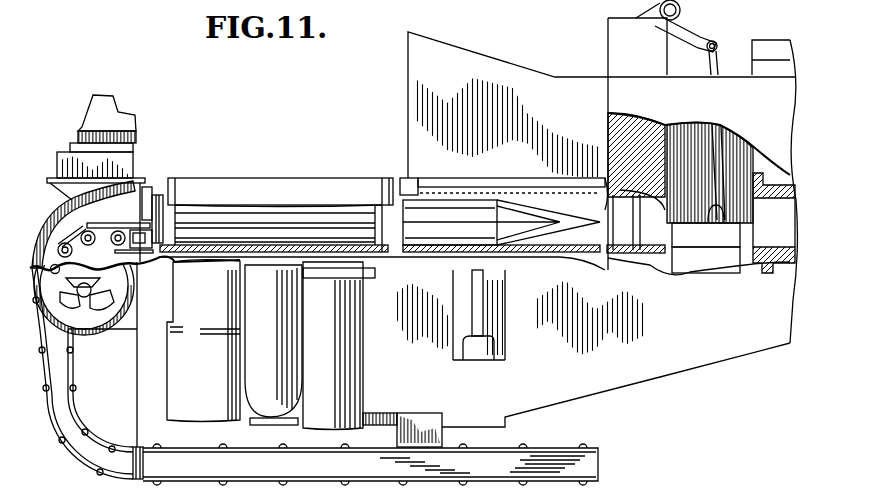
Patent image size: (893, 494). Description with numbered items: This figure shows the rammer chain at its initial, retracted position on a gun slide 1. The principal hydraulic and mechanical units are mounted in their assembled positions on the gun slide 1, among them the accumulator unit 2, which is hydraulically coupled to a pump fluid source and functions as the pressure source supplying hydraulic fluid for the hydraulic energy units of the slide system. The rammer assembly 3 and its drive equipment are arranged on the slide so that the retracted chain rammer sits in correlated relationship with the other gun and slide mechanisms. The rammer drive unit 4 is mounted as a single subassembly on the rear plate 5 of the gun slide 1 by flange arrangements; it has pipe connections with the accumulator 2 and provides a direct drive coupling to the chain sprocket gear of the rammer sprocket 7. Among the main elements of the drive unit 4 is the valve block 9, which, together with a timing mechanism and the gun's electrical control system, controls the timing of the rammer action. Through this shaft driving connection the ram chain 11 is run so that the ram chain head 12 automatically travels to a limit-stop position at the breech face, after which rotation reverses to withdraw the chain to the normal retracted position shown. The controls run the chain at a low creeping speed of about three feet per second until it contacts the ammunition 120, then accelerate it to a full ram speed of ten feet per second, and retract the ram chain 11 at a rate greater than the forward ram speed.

The gun slide 1 is at (408, 91).
The accumulator unit 2 is at (167, 363).
The rammer assembly 3 is at (76, 383).
The rammer drive unit 4 is at (50, 238).
The rear plate 5 is at (140, 337).
The rammer sprocket 7 is at (77, 229).
The valve block 9 is at (125, 167).
The ram chain 11 is at (111, 234).
The ram chain head 12 is at (151, 262).
The ammunition 120 is at (188, 213).